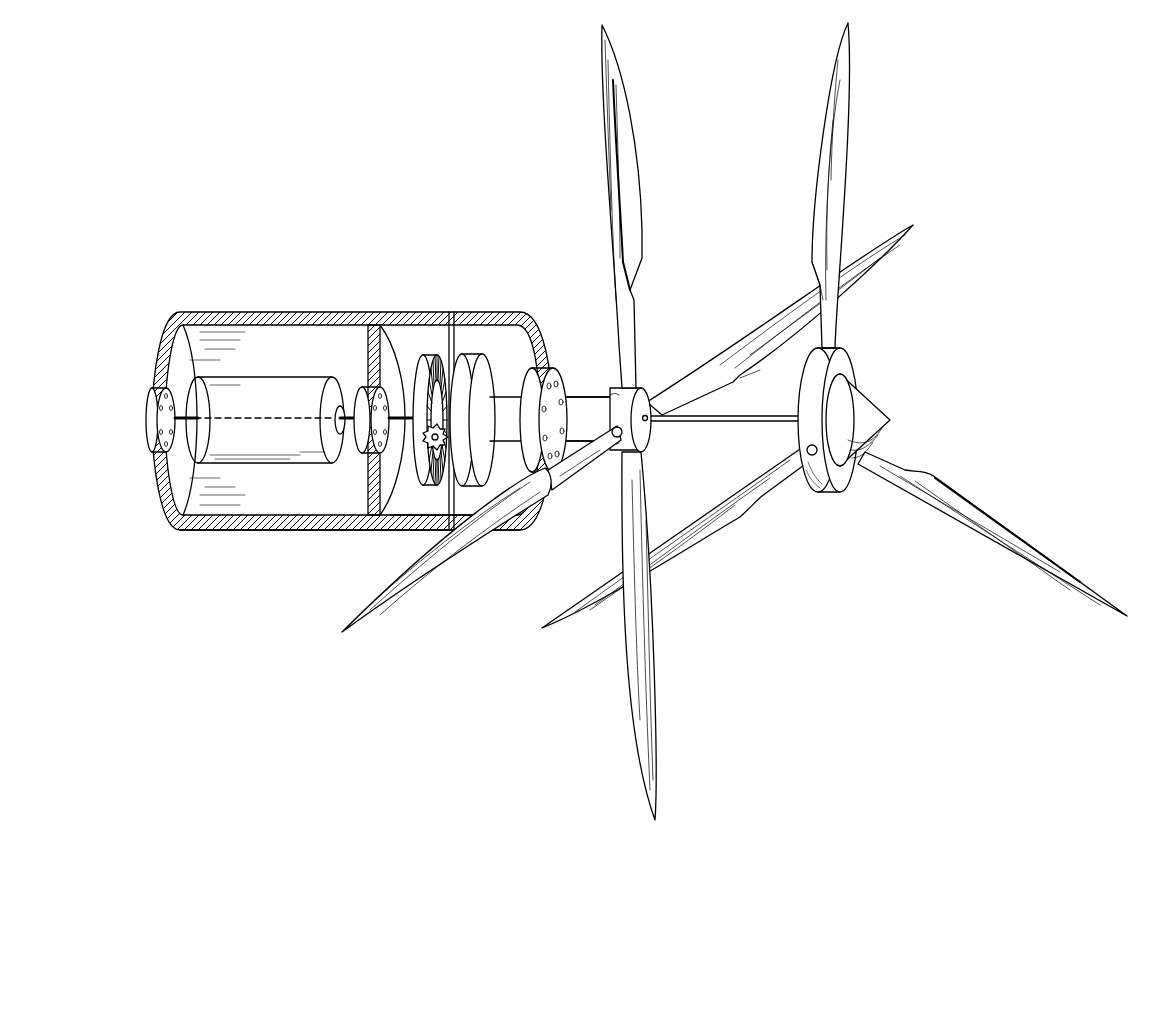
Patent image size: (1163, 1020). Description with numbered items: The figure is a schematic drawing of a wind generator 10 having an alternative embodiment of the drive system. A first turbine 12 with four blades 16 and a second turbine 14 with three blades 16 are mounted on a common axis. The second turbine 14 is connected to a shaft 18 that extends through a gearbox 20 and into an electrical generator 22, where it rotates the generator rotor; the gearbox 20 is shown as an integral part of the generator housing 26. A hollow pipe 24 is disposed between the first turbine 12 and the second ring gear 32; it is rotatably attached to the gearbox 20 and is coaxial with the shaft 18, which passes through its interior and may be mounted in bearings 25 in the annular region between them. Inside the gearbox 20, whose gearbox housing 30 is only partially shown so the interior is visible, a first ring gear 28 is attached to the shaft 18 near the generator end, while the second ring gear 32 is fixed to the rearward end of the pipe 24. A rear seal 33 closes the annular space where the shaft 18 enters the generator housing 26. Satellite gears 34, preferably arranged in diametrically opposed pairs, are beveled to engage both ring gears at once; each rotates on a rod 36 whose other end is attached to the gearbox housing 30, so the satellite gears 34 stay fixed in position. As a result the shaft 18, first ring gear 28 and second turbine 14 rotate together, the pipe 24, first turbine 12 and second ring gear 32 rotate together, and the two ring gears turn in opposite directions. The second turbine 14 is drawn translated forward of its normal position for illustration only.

The wind generator 10 is at (280, 100).
The first turbine 12 is at (650, 148).
The second turbine 14 is at (858, 150).
The blades 16 is at (992, 505).
The shaft 18 is at (784, 418).
The gearbox 20 is at (427, 390).
The electrical generator 22 is at (334, 290).
The pipe 24 is at (643, 405).
The bearings 25 is at (648, 432).
The generator housing 26 is at (253, 532).
The first ring gear 28 is at (418, 365).
The gearbox housing 30 is at (415, 530).
The second ring gear 32 is at (456, 330).
The rear seal 33 is at (369, 400).
The satellite gears 34 is at (428, 358).
The rod 36 is at (455, 345).